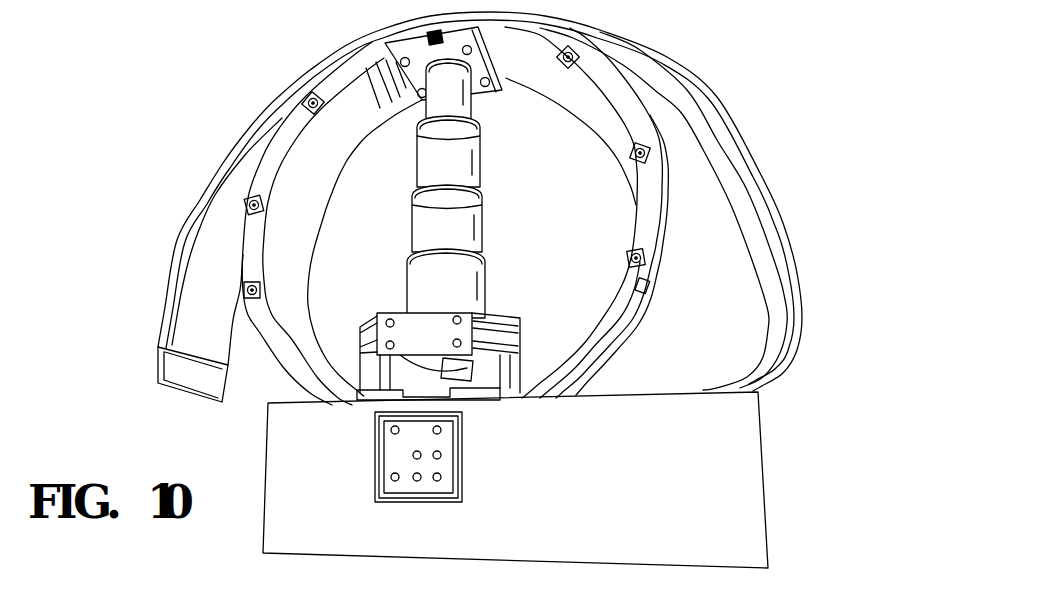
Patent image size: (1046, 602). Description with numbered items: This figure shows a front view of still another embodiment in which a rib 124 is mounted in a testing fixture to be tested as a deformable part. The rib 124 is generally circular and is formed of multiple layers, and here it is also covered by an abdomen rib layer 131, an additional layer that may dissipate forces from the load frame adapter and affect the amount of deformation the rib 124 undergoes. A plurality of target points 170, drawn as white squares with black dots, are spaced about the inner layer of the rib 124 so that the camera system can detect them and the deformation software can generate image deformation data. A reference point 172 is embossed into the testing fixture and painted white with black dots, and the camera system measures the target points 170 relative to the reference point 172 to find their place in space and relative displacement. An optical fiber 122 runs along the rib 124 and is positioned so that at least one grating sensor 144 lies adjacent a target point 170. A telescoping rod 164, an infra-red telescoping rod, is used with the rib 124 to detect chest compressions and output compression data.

The target points 170 is at (304, 100).
The abdomen rib layer 131 is at (190, 292).
The rib 124 is at (270, 327).
The optical fiber 122 is at (630, 323).
The grating sensor 144 is at (653, 288).
The telescoping rod 164 is at (440, 230).
The reference point 172 is at (397, 453).